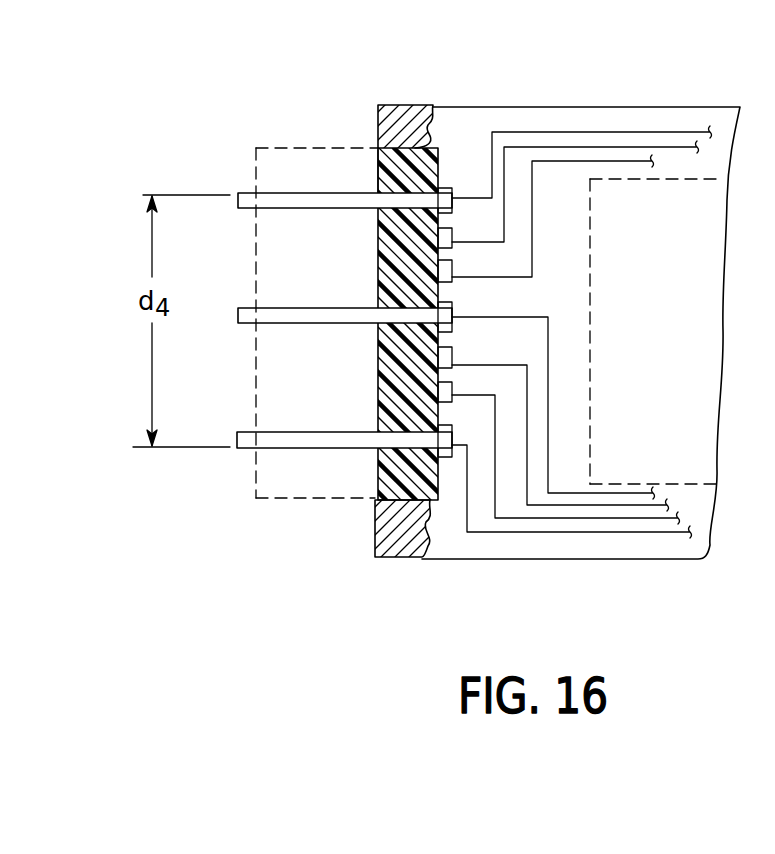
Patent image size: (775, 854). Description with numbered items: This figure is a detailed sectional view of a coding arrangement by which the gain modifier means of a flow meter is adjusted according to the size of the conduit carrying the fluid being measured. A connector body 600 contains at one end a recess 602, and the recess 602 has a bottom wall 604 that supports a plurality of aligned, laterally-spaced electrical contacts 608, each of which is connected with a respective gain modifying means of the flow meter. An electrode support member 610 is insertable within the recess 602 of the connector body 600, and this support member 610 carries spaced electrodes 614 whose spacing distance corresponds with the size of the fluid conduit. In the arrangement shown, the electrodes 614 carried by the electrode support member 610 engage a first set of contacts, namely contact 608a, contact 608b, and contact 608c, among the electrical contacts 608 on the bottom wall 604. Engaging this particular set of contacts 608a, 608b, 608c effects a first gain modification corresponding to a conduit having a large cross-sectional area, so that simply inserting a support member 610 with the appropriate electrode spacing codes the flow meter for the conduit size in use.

The connector body 600 is at (447, 105).
The recess 602 is at (378, 170).
The bottom wall 604 is at (378, 478).
The electrical contacts 608 is at (437, 398).
The first contact 608a is at (455, 212).
The second contact 608b is at (455, 312).
The third contact 608c is at (455, 445).
The electrode support member 610 is at (378, 186).
The electrodes 614 is at (238, 192).